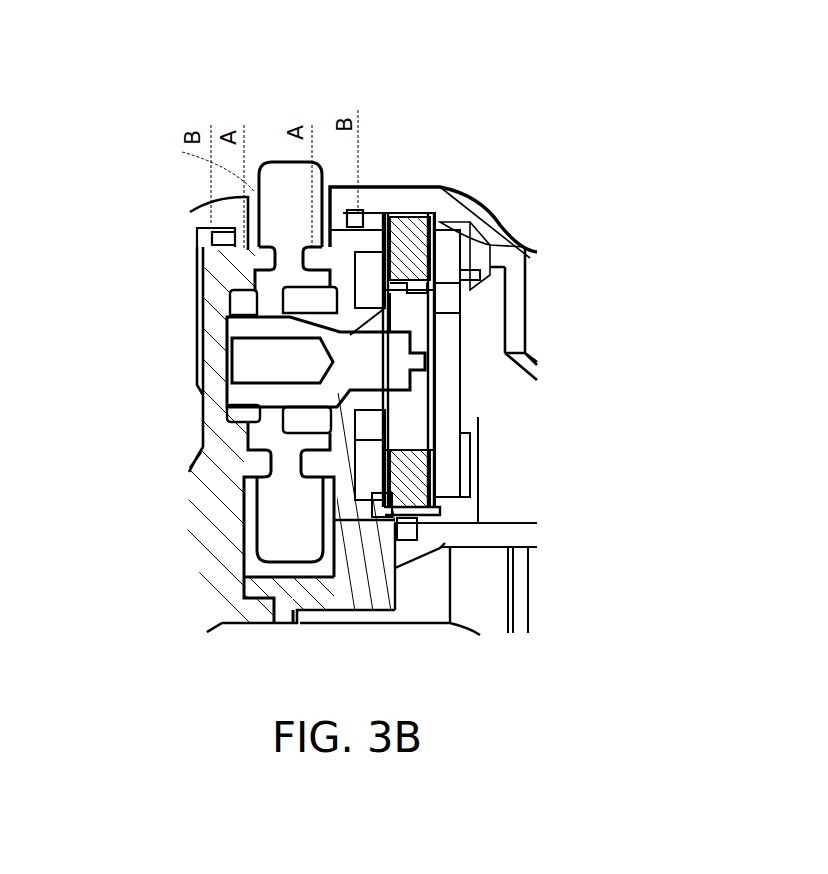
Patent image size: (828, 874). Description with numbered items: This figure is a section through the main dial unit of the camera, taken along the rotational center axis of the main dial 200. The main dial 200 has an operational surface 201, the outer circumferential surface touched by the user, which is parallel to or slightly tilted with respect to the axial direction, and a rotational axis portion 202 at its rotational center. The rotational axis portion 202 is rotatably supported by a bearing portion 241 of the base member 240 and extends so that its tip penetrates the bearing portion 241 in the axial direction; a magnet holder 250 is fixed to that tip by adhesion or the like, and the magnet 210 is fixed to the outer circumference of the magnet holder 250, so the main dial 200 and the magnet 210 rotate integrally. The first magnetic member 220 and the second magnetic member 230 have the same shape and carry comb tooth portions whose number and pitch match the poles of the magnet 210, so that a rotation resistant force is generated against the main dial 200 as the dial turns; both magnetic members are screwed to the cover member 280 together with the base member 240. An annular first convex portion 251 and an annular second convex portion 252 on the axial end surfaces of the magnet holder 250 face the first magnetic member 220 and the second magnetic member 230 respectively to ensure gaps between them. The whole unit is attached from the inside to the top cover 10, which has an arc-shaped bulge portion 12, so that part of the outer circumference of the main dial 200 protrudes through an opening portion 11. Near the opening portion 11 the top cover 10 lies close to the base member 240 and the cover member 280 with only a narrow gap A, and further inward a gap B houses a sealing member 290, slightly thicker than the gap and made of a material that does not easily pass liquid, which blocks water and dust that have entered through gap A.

The top cover 10 is at (503, 237).
The opening portion 11 is at (201, 164).
The bulge portion 12 is at (373, 207).
The main dial 200 is at (280, 222).
The operational surface 201 is at (290, 158).
The rotational axis portion 202 is at (380, 355).
The magnet 210 is at (440, 187).
The first magnetic member 220 is at (450, 483).
The second magnetic member 230 is at (490, 455).
The base member 240 is at (368, 400).
The bearing portion 241 is at (383, 213).
The magnet holder 250 is at (413, 320).
The first convex portion 251 is at (320, 298).
The second convex portion 252 is at (510, 262).
The cover member 280 is at (236, 612).
The sealing member 290 is at (347, 212).